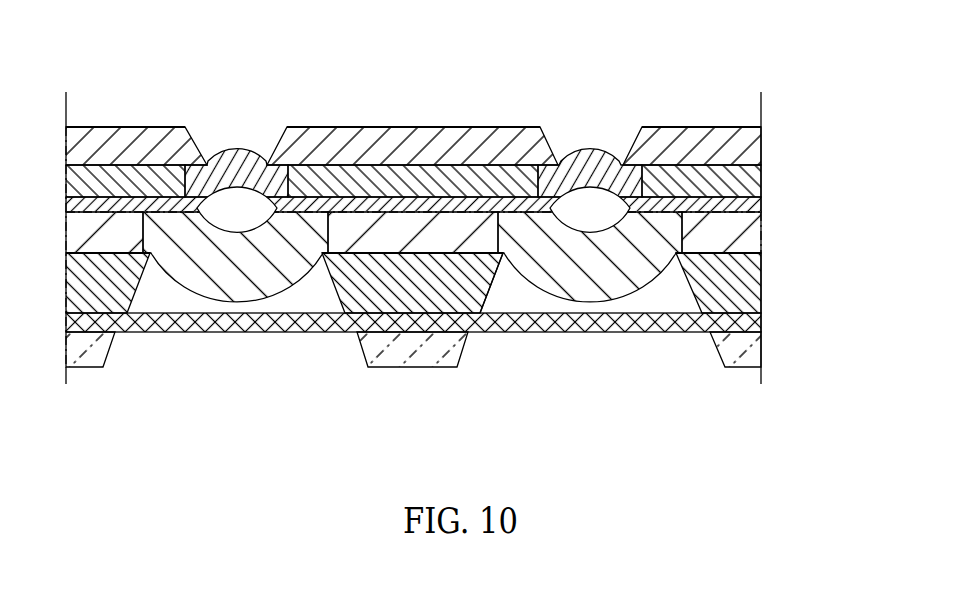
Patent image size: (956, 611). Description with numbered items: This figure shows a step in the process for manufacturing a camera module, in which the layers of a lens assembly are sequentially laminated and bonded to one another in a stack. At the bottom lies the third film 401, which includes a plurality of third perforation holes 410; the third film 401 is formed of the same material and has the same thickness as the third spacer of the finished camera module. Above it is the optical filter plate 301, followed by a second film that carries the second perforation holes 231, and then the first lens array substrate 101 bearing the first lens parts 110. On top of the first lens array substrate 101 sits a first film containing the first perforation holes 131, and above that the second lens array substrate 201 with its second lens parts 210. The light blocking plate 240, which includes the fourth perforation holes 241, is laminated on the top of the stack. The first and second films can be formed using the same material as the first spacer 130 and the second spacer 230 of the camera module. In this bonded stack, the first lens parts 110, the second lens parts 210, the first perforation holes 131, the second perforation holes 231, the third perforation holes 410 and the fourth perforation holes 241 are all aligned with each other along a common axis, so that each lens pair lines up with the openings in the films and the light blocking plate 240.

The first lens array substrate 101 is at (752, 237).
The first lens parts 110 is at (566, 265).
The first spacer 130 is at (755, 286).
The first perforation holes 131 is at (525, 302).
The second lens array substrate 201 is at (753, 182).
The second lens parts 210 is at (593, 149).
The second spacer 230 is at (755, 206).
The second perforation holes 231 is at (597, 207).
The light blocking plate 240 is at (756, 144).
The fourth perforation holes 241 is at (578, 130).
The optical filter plate 301 is at (755, 324).
The third film 401 is at (755, 356).
The third perforation holes 410 is at (257, 348).